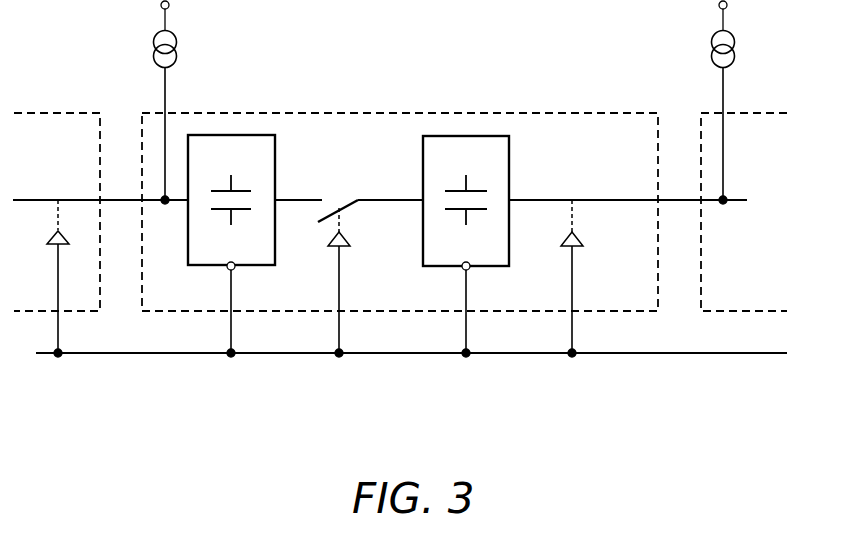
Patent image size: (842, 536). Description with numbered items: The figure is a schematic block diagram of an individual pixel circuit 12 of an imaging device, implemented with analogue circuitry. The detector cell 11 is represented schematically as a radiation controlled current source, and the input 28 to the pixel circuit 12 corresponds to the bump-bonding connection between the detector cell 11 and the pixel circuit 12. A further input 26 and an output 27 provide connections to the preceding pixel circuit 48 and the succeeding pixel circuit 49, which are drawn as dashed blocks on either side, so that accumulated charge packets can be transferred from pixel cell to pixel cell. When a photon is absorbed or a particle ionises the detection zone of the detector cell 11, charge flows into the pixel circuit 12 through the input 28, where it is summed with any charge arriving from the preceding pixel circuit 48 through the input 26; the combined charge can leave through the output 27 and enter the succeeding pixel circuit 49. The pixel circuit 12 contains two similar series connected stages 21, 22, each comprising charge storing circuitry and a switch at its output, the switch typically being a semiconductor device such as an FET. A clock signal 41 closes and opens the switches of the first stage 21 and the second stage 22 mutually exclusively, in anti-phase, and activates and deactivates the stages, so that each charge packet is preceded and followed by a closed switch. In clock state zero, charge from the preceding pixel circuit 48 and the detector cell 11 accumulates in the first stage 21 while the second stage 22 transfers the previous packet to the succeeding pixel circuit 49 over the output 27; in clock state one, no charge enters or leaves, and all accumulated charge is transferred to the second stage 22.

The detector cell 11 is at (178, 44).
The pixel circuit 12 is at (648, 146).
The first stage 21 is at (295, 281).
The second stage 22 is at (531, 281).
The input 26 is at (124, 201).
The output 27 is at (680, 203).
The input 28 is at (165, 90).
The clock signal 41 is at (757, 353).
The preceding pixel circuit 48 is at (91, 146).
The succeeding pixel circuit 49 is at (776, 146).